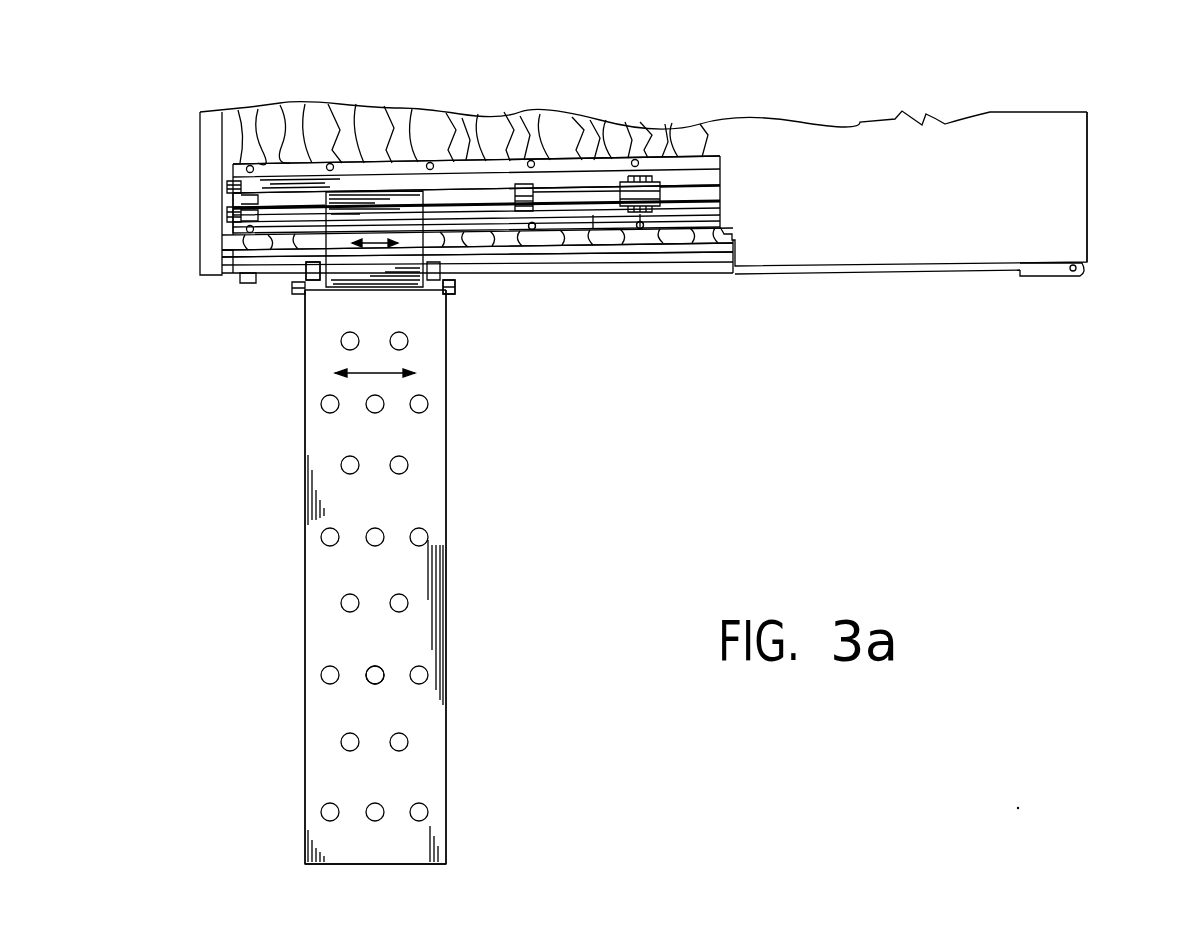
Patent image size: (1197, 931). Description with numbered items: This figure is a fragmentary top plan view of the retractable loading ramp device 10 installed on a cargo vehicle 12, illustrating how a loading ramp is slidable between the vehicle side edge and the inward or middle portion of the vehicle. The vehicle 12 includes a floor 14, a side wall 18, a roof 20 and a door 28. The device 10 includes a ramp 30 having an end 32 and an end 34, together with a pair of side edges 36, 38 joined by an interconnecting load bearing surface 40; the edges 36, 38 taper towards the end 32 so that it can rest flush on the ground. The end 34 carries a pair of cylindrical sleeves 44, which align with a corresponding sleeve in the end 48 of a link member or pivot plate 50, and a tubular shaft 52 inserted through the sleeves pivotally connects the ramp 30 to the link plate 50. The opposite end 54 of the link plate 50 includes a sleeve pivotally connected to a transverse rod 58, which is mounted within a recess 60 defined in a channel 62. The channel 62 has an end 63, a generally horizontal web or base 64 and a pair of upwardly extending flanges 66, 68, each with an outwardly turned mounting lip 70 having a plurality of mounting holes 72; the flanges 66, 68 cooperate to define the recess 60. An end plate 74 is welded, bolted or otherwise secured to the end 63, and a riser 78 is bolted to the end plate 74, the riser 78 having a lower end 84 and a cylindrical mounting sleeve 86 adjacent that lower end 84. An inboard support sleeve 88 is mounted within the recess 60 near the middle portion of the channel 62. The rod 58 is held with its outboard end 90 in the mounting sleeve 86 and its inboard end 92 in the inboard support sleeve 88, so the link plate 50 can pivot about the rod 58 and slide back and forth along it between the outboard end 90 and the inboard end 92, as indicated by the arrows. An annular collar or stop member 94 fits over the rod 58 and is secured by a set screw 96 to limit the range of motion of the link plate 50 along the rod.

The retractable loading ramp device 10 is at (565, 420).
The cargo vehicle 12 is at (1087, 162).
The floor 14 is at (256, 130).
The side wall 18 is at (1087, 218).
The roof 20 is at (930, 213).
The door 28 is at (948, 273).
The ramp 30 is at (450, 582).
The end 32 is at (322, 855).
The end 34 is at (335, 295).
The side edge 36 is at (447, 513).
The side edge 38 is at (305, 533).
The load bearing surface 40 is at (355, 658).
The cylindrical sleeves 44 is at (307, 297).
The end 48 is at (303, 289).
The link member or pivot plate 50 is at (374, 239).
The tubular shaft 52 is at (457, 297).
The end 54 is at (390, 207).
The transverse rod 58 is at (523, 195).
The recess 60 is at (597, 178).
The channel 62 is at (462, 155).
The end 63 is at (248, 255).
The web or base 64 is at (700, 182).
The flange 66 is at (687, 220).
The flange 68 is at (643, 190).
The mounting lip 70 is at (660, 188).
The mounting holes 72 is at (534, 230).
The end plate 74 is at (228, 183).
The riser 78 is at (272, 203).
The lower end 84 is at (228, 238).
The cylindrical mounting sleeve 86 is at (232, 203).
The inboard support sleeve 88 is at (698, 181).
The outboard end 90 is at (262, 178).
The inboard end 92 is at (620, 222).
The annular collar or stop member 94 is at (598, 186).
The set screw 96 is at (605, 197).